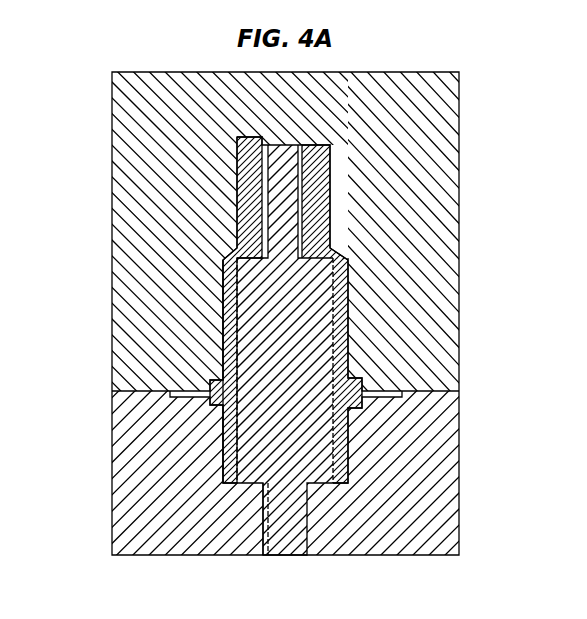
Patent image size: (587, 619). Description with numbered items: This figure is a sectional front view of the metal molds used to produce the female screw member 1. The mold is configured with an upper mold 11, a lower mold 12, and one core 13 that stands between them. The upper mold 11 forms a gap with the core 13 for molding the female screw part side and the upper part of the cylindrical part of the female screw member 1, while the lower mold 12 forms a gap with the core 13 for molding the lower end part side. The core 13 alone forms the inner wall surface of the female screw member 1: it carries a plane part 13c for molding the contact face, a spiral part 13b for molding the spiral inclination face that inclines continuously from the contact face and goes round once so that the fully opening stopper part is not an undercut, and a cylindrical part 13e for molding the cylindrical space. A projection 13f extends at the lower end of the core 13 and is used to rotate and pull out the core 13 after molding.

The female screw member 1 is at (222, 338).
The upper mold 11 is at (459, 249).
The lower mold 12 is at (459, 452).
The core 13 is at (345, 362).
The spiral part 13b is at (222, 283).
The plane part 13c is at (342, 252).
The cylindrical part 13e is at (340, 453).
The projection 13f is at (263, 518).